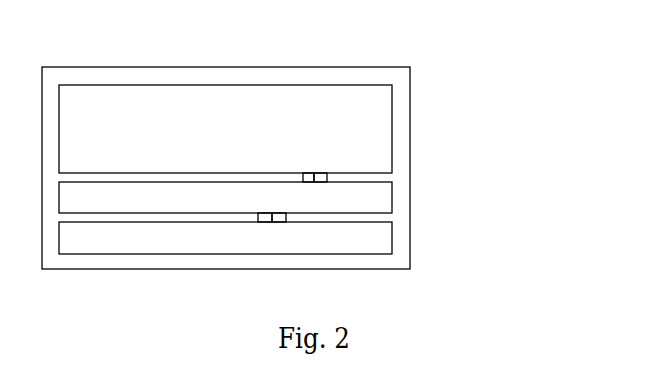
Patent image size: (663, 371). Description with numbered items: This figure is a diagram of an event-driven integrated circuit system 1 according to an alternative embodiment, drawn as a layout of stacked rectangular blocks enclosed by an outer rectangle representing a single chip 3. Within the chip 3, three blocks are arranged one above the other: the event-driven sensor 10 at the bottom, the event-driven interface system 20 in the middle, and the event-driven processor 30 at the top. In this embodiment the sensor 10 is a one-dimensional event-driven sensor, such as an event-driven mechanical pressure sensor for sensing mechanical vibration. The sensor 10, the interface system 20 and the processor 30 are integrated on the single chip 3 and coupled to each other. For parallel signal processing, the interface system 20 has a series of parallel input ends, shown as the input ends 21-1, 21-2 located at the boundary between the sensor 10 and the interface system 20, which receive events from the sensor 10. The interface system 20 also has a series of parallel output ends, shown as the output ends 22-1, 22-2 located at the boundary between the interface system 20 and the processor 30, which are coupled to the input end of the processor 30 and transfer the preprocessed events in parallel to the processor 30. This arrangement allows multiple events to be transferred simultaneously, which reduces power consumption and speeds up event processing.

The event-driven integrated circuit system 1 is at (325, 148).
The single chip 3 is at (398, 145).
The event-driven sensor 10 is at (238, 250).
The event-driven interface system 20 is at (238, 210).
The event-driven processor 30 is at (238, 140).
The parallel input end 21-1 is at (280, 218).
The parallel input end 21-2 is at (286, 218).
The parallel output end 22-1 is at (320, 178).
The parallel output end 22-2 is at (327, 178).